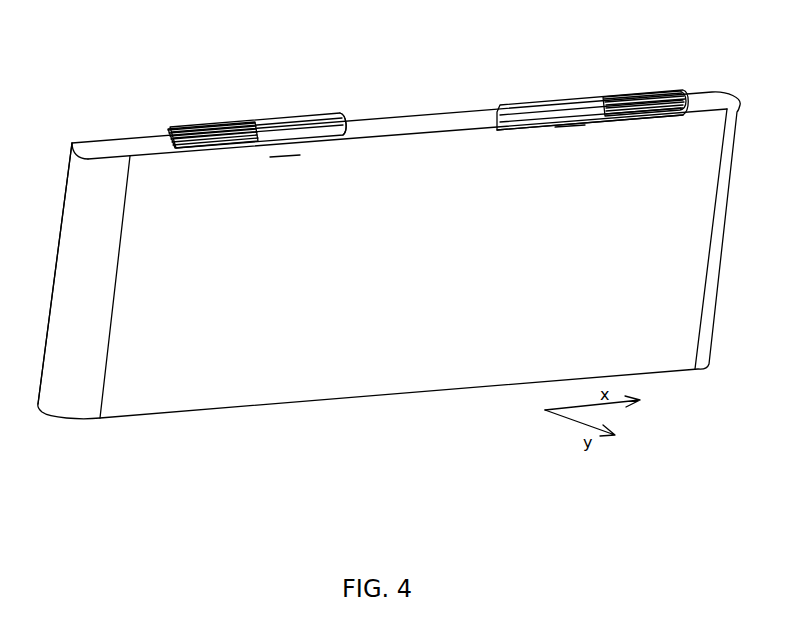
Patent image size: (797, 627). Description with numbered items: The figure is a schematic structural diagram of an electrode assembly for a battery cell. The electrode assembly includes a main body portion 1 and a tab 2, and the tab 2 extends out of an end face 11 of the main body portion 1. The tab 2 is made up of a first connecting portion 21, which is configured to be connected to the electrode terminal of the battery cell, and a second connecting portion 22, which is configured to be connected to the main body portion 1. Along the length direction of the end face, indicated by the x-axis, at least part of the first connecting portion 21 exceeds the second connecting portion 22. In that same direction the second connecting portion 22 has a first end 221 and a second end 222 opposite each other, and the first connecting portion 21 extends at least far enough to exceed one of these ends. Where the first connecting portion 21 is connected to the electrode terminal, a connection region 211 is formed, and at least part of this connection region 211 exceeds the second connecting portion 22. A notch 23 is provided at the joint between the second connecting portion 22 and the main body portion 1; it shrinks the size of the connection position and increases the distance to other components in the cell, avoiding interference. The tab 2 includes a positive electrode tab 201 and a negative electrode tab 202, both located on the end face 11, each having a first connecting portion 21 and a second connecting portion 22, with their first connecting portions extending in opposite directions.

The main body portion 1 is at (75, 263).
The end face 11 is at (110, 149).
The tab 2 is at (321, 72).
The first connecting portion 21 is at (270, 131).
The connection region 211 is at (195, 137).
The second connecting portion 22 is at (340, 124).
The second end 222 is at (517, 121).
The notch 23 is at (637, 97).
The first end 221 is at (603, 118).
The positive electrode tab 201 is at (290, 152).
The negative electrode tab 202 is at (572, 132).